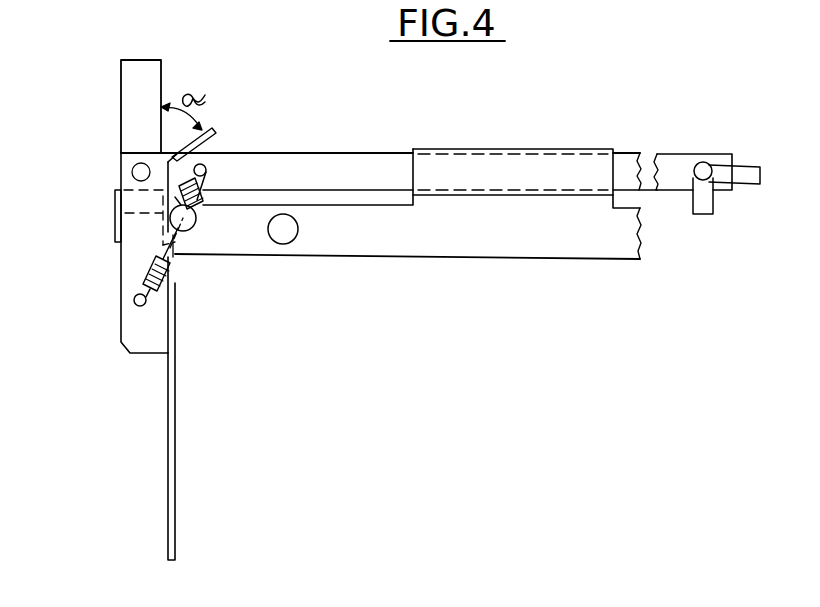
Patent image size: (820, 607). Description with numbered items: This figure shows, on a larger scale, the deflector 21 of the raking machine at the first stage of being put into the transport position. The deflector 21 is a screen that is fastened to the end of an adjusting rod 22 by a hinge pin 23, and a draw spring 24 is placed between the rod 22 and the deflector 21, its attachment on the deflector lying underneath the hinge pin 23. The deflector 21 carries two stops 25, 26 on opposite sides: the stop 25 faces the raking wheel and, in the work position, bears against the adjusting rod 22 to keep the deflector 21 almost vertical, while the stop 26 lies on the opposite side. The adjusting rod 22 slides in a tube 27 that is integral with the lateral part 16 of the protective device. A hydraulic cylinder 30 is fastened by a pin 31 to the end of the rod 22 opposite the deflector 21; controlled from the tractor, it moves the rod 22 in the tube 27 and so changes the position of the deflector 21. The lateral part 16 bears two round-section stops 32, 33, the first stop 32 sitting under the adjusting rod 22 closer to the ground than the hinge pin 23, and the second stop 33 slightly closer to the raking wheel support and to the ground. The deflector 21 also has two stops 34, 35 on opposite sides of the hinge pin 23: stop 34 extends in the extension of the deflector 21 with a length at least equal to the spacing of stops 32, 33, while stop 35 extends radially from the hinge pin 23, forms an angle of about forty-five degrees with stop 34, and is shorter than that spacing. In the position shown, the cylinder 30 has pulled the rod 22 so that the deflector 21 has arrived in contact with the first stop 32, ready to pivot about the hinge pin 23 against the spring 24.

The lateral part 16 is at (442, 245).
The deflector 21 is at (170, 422).
The adjusting rod 22 is at (327, 157).
The hinge pin 23 is at (138, 163).
The draw spring 24 is at (172, 263).
The stop 25 is at (112, 208).
The stop 26 is at (113, 217).
The tube 27 is at (470, 155).
The hydraulic cylinder 30 is at (748, 170).
The pin 31 is at (698, 160).
The first stop 32 is at (197, 223).
The second stop 33 is at (288, 233).
The stop 34 is at (150, 82).
The stop 35 is at (213, 131).